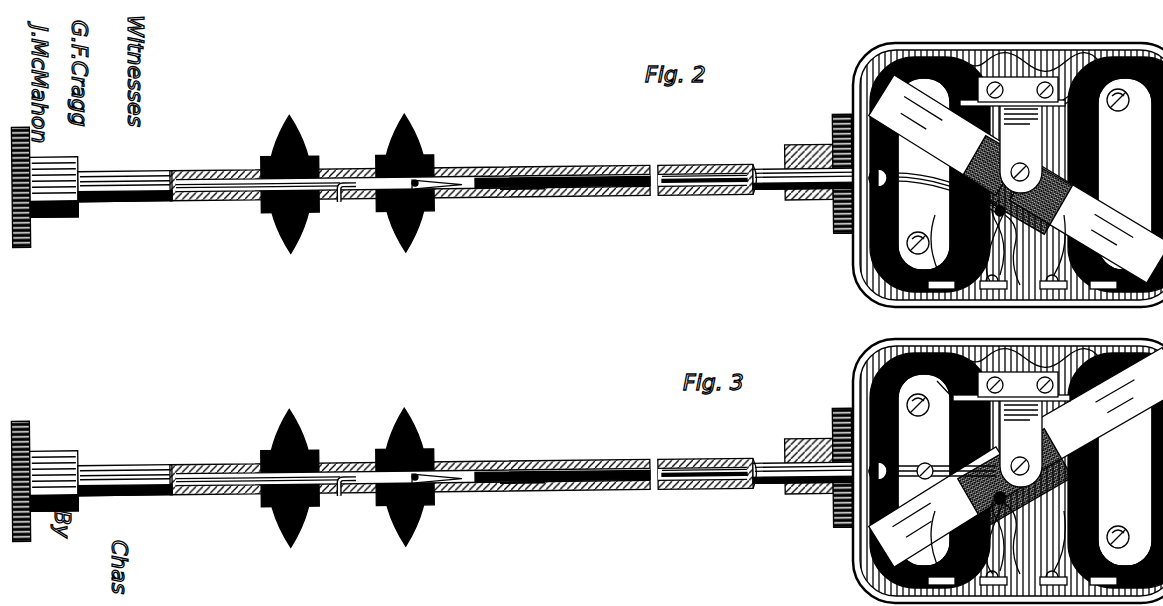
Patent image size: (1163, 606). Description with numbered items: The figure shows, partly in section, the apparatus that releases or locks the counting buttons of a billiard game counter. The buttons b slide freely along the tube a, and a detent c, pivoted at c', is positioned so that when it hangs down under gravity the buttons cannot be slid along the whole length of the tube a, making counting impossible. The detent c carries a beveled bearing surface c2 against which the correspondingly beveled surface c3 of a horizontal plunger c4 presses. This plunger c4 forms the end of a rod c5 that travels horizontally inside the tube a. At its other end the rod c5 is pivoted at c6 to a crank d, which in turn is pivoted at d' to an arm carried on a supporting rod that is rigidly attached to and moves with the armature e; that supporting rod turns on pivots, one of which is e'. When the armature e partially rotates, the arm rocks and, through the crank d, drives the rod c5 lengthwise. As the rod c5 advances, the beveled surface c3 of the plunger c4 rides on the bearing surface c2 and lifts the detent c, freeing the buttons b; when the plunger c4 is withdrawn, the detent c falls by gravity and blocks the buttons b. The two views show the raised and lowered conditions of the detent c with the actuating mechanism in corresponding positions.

In FIG. 2, the tube a is at (553, 167).
In FIG. 3, the tube a is at (462, 460).
In FIG. 2, the buttons b is at (302, 150).
In FIG. 3, the buttons b is at (350, 478).
In FIG. 2, the detent c is at (343, 208).
In FIG. 3, the detent c is at (343, 502).
In FIG. 2, the pivot c' is at (440, 206).
In FIG. 3, the pivot c' is at (440, 500).
In FIG. 2, the beveled bearing surface c2 is at (443, 178).
In FIG. 3, the beveled bearing surface c2 is at (447, 452).
In FIG. 2, the beveled surface c3 is at (478, 176).
In FIG. 3, the beveled surface c3 is at (562, 451).
In FIG. 2, the horizontal plunger c4 is at (517, 198).
In FIG. 3, the horizontal plunger c4 is at (522, 502).
In FIG. 2, the rod c5 is at (692, 186).
In FIG. 3, the rod c5 is at (704, 492).
In FIG. 3, the pivot c6 is at (923, 463).
In FIG. 2, the crank d is at (945, 135).
In FIG. 3, the crank d is at (945, 495).
In FIG. 2, the pivot d' is at (1101, 174).
In FIG. 3, the pivot d' is at (1112, 470).
In FIG. 2, the armature e is at (1086, 222).
In FIG. 3, the armature e is at (1089, 410).
In FIG. 2, the pivot e' is at (1021, 148).
In FIG. 3, the pivot e' is at (1021, 443).